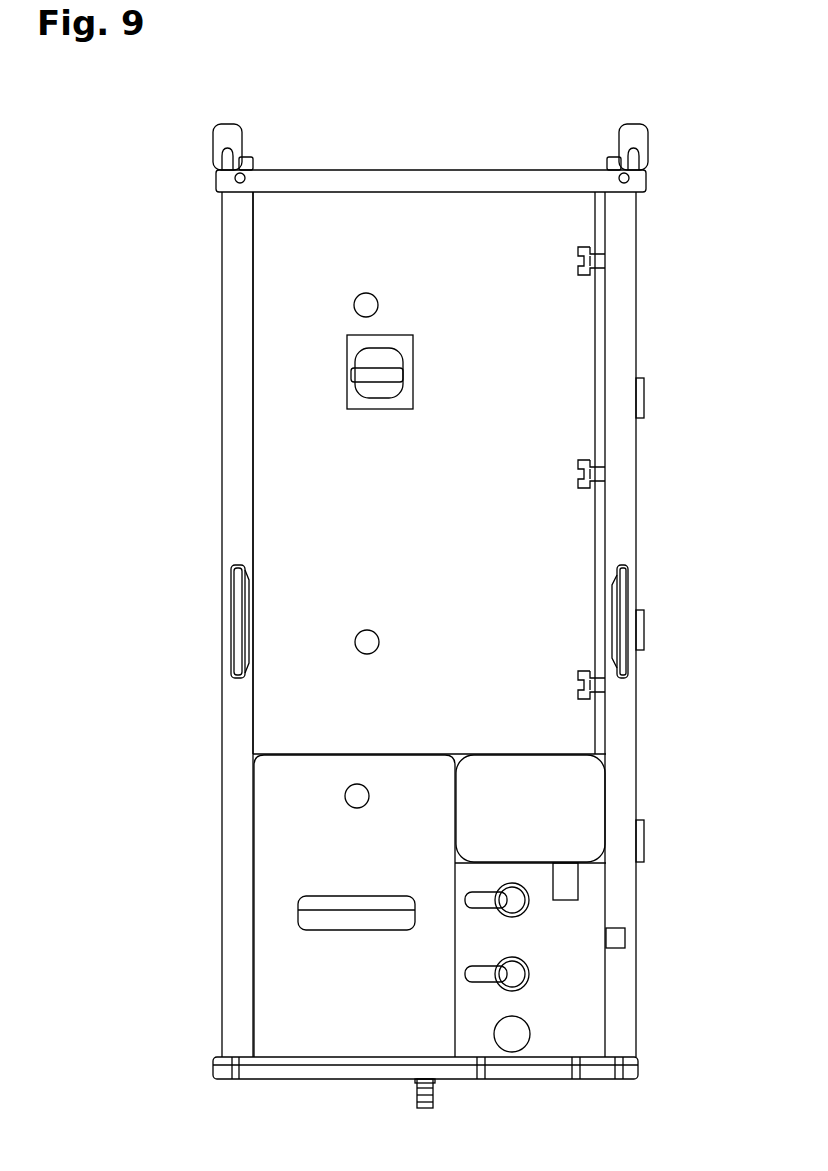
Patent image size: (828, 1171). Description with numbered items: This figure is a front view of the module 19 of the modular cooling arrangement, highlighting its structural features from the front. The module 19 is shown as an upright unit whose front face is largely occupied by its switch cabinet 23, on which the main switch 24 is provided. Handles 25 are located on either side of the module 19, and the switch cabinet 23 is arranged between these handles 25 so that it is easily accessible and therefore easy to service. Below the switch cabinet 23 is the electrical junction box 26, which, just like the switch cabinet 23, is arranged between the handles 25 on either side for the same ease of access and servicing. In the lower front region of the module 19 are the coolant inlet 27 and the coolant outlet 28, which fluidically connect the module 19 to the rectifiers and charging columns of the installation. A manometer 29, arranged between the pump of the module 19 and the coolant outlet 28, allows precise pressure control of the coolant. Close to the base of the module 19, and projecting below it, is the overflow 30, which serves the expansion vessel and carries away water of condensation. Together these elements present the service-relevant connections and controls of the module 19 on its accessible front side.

The module 19 is at (128, 157).
The switch cabinet 23 is at (553, 222).
The main switch 24 is at (395, 375).
The handles 25 is at (228, 620).
The electrical junction box 26 is at (548, 798).
The coolant inlet 27 is at (512, 898).
The coolant outlet 28 is at (512, 974).
The manometer 29 is at (512, 1034).
The overflow 30 is at (412, 1090).